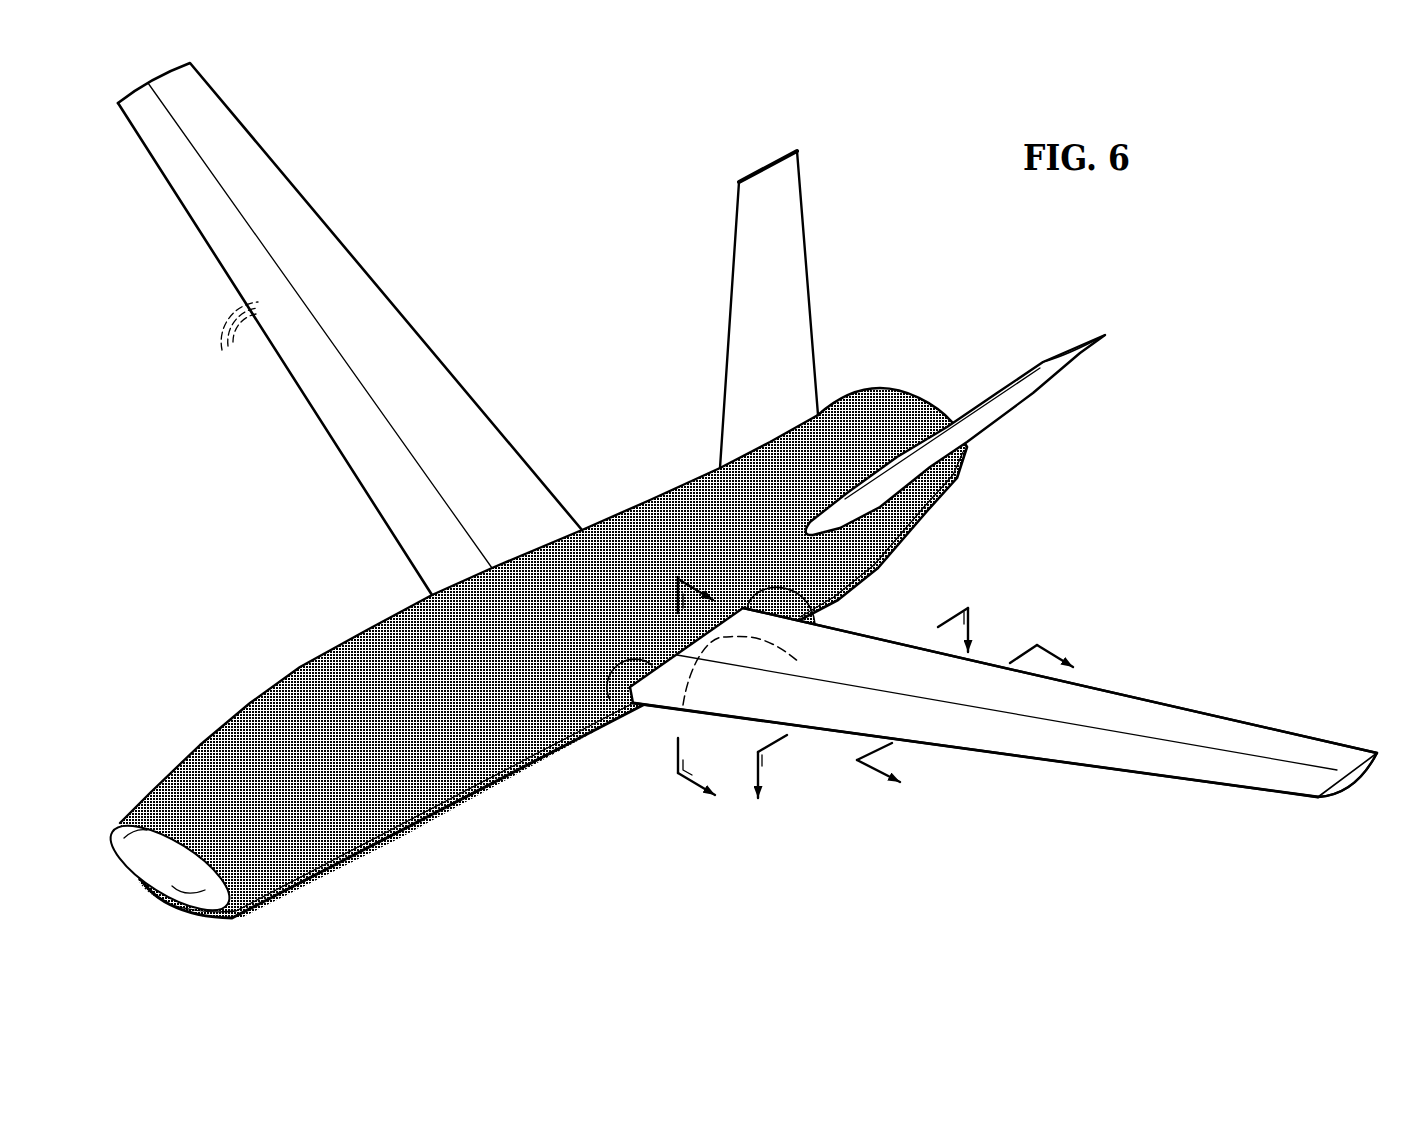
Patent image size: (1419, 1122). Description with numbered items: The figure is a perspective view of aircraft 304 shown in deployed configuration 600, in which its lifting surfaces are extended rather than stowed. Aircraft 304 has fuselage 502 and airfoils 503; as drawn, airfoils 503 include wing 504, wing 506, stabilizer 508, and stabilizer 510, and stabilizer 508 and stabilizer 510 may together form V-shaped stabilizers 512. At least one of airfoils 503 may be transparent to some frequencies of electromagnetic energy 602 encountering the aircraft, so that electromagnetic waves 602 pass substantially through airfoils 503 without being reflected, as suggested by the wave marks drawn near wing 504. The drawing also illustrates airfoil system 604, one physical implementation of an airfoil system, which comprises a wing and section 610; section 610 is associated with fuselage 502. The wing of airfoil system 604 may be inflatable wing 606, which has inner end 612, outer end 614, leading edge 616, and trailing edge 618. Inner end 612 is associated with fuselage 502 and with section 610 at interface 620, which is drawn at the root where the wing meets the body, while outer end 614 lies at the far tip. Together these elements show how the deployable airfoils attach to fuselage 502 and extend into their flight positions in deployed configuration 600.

The deployed configuration 600 is at (515, 187).
The fuselage 502 is at (478, 778).
The airfoils 503 is at (646, 800).
The wing 504 is at (350, 329).
The wing 506 is at (1004, 708).
The stabilizer 508 is at (728, 320).
The stabilizer 510 is at (967, 405).
The V-shaped stabilizers 512 is at (1078, 330).
The aircraft 304 is at (910, 390).
The electromagnetic energy 602 is at (228, 323).
The airfoil system 604 is at (397, 628).
The inflatable wing 606 is at (1100, 688).
The section 610 is at (800, 663).
The inner end 612 is at (828, 613).
The outer end 614 is at (1353, 770).
The leading edge 616 is at (1170, 778).
The trailing edge 618 is at (1227, 717).
The interface 620 is at (619, 722).